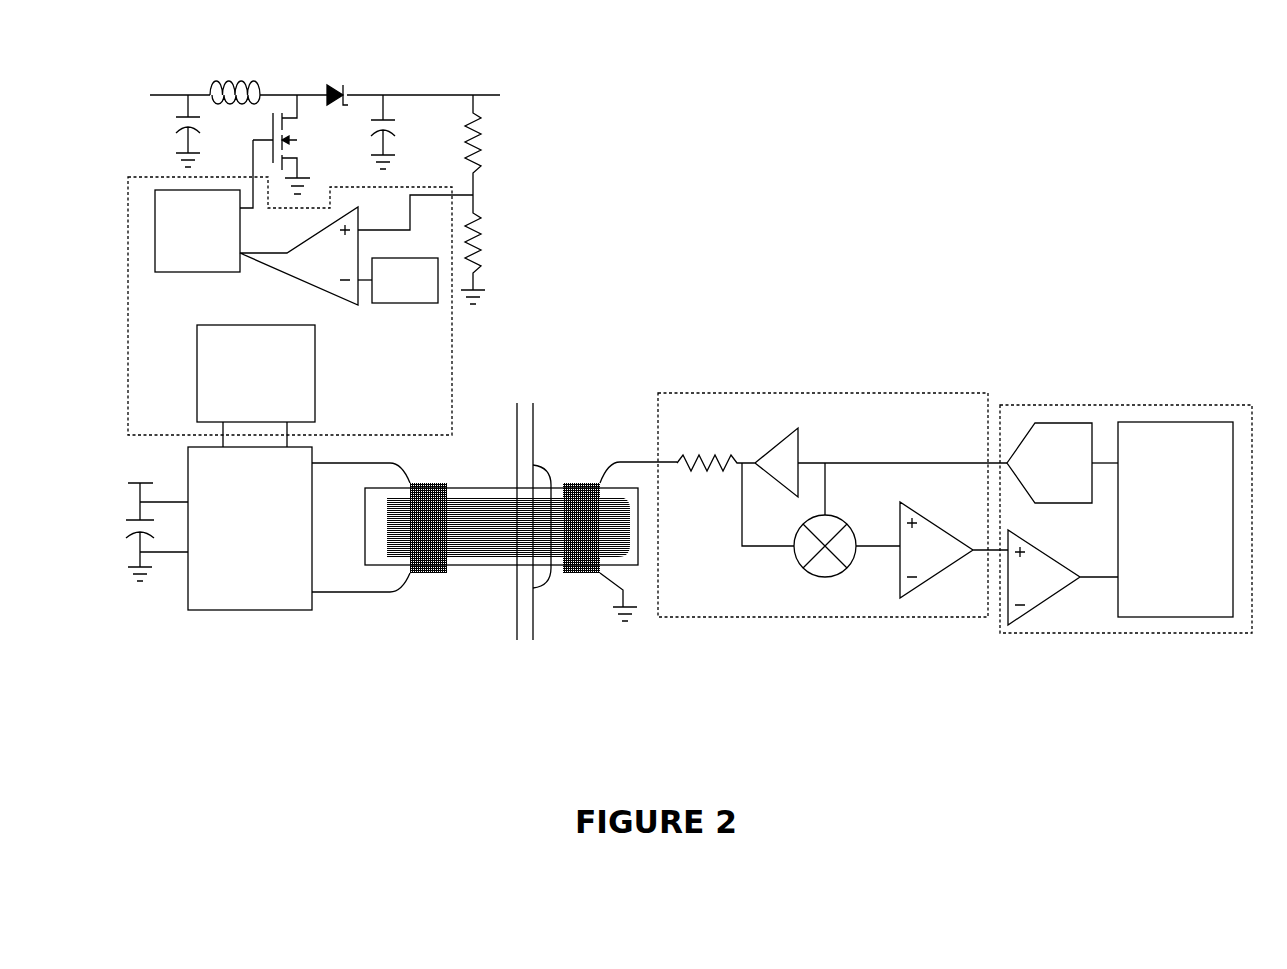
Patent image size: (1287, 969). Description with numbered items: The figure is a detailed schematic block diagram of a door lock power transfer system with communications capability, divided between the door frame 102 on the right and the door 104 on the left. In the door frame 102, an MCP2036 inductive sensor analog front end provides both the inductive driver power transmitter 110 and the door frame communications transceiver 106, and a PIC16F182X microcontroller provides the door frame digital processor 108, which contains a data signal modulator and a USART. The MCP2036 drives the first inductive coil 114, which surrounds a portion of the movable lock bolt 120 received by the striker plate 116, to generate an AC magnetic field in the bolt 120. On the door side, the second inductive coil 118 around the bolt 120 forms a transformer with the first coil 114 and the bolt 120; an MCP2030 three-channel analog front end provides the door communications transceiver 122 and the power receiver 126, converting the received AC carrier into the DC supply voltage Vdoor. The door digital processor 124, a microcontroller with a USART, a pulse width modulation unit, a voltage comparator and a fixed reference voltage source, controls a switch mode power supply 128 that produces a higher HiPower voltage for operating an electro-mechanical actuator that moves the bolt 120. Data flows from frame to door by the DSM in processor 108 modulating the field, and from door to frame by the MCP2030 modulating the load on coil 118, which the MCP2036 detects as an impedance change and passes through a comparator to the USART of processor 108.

The door frame 102 is at (740, 693).
The door 104 is at (402, 693).
The door frame communications transceiver 106 is at (912, 618).
The door frame digital processor 108 is at (1140, 634).
The inductive driver power transmitter 110 is at (748, 618).
The first inductive coil 114 is at (583, 573).
The striker plate 116 is at (545, 468).
The second inductive coil 118 is at (428, 573).
The lock bolt 120 is at (487, 562).
The door communications transceiver 122 is at (255, 550).
The door digital processor 124 is at (128, 255).
The power receiver 126 is at (255, 550).
The switch mode power supply 128 is at (371, 33).